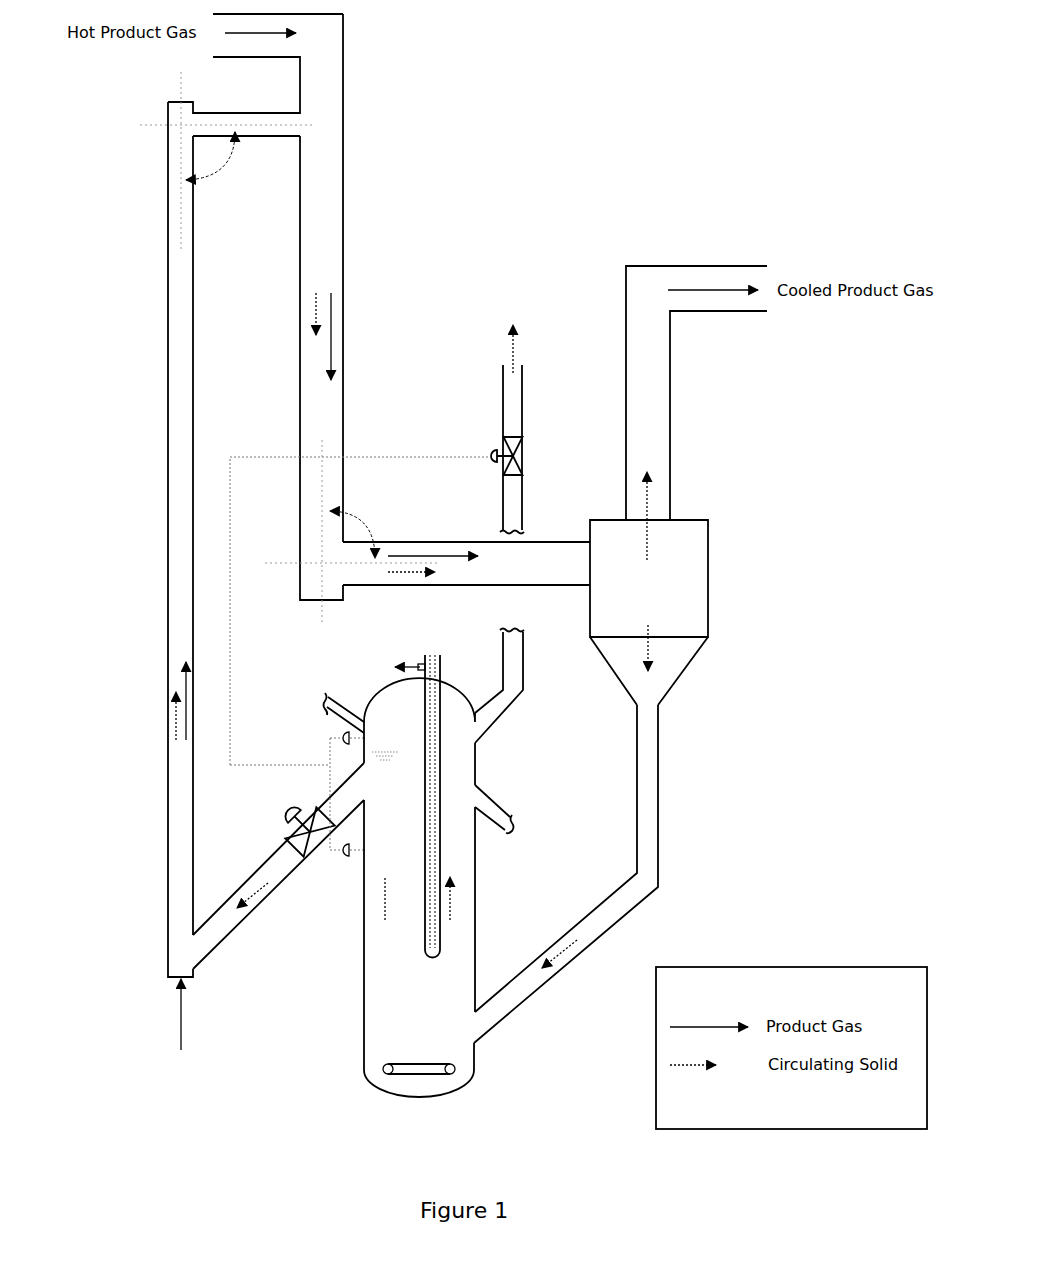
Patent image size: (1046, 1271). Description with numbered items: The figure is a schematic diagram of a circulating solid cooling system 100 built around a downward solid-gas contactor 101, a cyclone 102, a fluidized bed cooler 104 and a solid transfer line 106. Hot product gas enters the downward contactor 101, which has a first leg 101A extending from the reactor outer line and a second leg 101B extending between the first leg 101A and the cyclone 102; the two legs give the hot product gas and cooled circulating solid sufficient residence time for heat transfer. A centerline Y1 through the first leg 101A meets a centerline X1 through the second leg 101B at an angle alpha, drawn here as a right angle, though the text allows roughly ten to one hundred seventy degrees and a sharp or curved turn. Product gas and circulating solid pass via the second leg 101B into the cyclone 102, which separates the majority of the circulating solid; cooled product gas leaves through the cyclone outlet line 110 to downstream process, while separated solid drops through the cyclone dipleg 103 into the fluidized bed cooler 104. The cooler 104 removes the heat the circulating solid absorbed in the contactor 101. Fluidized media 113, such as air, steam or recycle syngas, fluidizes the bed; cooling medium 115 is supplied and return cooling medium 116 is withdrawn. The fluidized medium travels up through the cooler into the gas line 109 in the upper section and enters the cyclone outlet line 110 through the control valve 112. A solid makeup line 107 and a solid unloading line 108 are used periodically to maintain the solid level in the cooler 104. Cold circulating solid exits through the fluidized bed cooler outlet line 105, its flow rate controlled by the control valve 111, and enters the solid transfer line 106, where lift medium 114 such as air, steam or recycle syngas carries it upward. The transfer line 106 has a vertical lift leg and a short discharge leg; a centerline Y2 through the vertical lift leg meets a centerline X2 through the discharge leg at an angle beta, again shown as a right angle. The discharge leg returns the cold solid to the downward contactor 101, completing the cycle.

The circulating solid cooling system 100 is at (580, 129).
The downward solid-gas contactor 101 is at (332, 95).
The first leg 101A is at (340, 282).
The second leg 101B is at (390, 550).
The cyclone 102 is at (700, 558).
The cyclone dipleg 103 is at (655, 822).
The fluidized bed cooler 104 is at (383, 967).
The fluidized bed cooler outlet line 105 is at (280, 870).
The solid transfer line 106 is at (177, 798).
The solid makeup line 107 is at (336, 697).
The solid unloading line 108 is at (498, 800).
The gas line 109 is at (503, 378).
The cyclone outlet line 110 is at (636, 278).
The control valve 111 is at (313, 803).
The control valve 112 is at (490, 440).
The fluidized media 113 is at (380, 1070).
The lift medium 114 is at (182, 1026).
The cooling medium 115 is at (432, 646).
The return cooling medium 116 is at (391, 666).
The centerline through the second leg X1 is at (300, 563).
The centerline through the first leg Y1 is at (322, 457).
The centerline through the discharge leg X2 is at (157, 125).
The centerline through the vertical lift leg Y2 is at (178, 152).